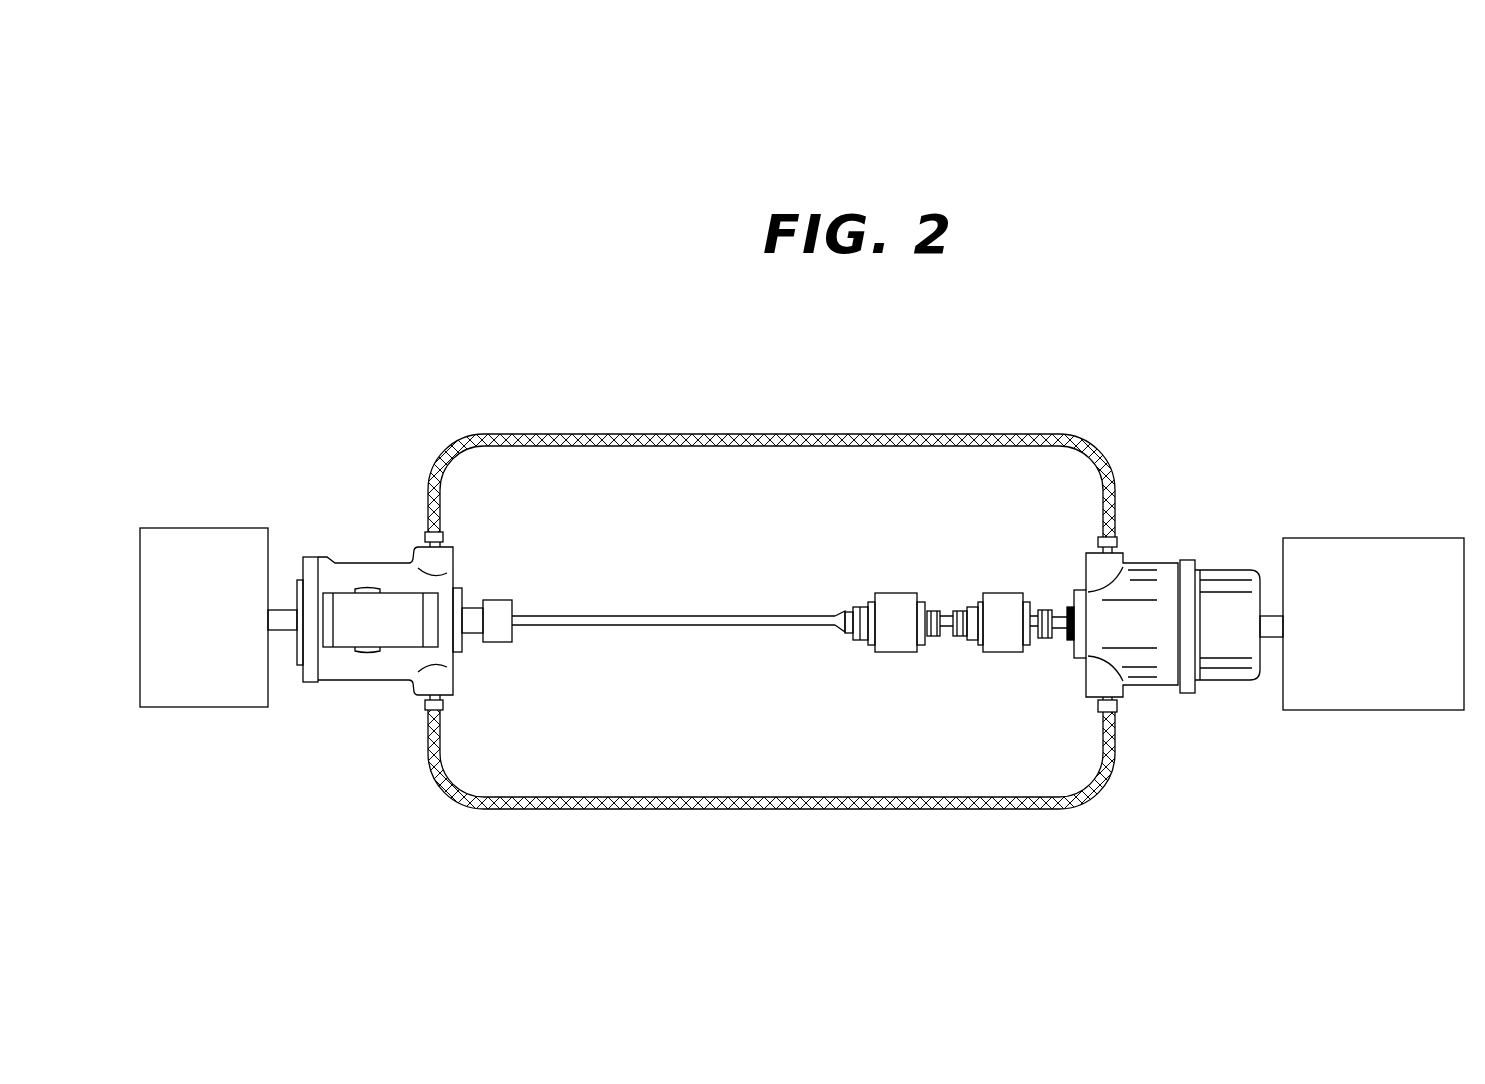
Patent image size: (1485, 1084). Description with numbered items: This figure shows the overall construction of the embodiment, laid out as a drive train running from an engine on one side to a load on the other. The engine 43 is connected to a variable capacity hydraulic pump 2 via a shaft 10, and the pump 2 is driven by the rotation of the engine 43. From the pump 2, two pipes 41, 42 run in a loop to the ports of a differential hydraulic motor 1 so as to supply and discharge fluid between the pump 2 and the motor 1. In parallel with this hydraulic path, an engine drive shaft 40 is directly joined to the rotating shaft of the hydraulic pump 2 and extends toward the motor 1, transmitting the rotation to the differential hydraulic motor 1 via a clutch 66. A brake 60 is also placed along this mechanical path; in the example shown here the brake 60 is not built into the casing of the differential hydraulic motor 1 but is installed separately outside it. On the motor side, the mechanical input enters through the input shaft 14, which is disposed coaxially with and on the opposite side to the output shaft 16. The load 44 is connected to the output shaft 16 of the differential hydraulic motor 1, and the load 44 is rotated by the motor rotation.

The differential hydraulic motor 1 is at (1170, 565).
The variable capacity hydraulic pump 2 is at (363, 577).
The shaft 10 is at (283, 612).
The input shaft 14 is at (1056, 642).
The first output shaft 16 is at (1270, 622).
The engine drive shaft 40 is at (585, 620).
The pipe 41 is at (740, 448).
The pipe 42 is at (730, 798).
The engine 43 is at (244, 688).
The load 44 is at (1397, 693).
The brake 60 is at (997, 602).
The clutch 66 is at (891, 602).